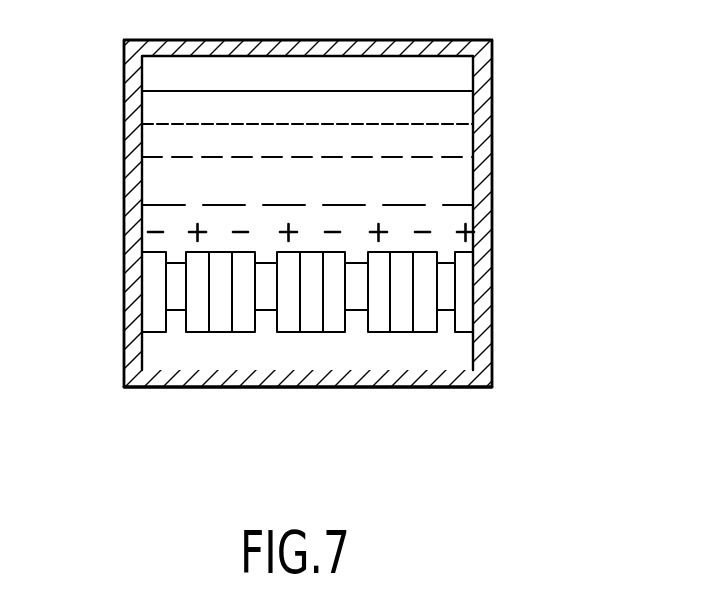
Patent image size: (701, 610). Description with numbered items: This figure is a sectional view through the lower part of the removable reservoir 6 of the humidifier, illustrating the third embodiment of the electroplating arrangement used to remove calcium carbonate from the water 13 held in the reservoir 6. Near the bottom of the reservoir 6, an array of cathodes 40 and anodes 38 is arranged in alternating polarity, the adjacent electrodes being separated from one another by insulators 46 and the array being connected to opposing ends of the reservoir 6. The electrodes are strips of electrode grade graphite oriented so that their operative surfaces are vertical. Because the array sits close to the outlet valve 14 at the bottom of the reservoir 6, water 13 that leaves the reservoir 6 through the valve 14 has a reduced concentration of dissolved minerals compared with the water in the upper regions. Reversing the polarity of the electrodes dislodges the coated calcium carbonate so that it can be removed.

The reservoir 6 is at (492, 110).
The water 13 is at (160, 141).
The valve 14 is at (307, 385).
The anode 38 is at (467, 280).
The cathode 40 is at (152, 290).
The insulators 46 is at (220, 323).